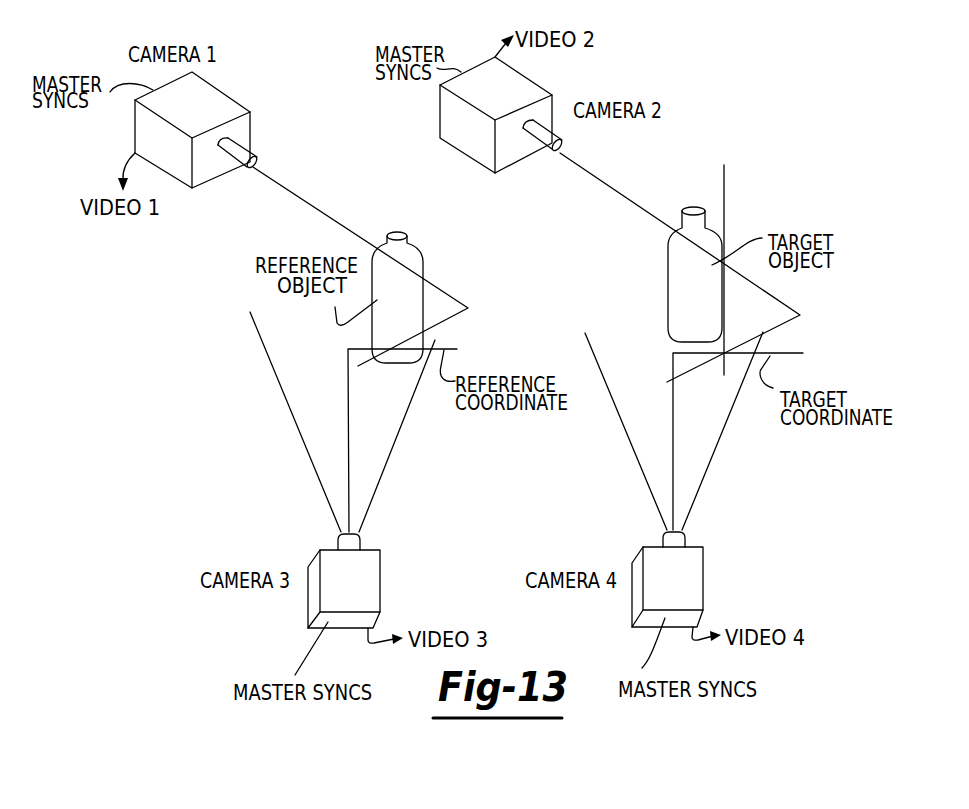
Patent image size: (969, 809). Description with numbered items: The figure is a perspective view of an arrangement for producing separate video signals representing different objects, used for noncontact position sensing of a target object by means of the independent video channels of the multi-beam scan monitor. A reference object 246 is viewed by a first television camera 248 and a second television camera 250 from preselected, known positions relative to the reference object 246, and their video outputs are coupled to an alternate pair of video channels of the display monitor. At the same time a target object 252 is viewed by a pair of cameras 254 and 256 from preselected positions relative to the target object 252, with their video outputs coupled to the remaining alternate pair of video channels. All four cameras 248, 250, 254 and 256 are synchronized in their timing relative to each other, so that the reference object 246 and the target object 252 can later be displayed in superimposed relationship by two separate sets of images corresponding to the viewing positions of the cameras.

The first television camera 248 is at (220, 102).
The camera 254 is at (530, 85).
The reference object 246 is at (405, 248).
The target object 252 is at (678, 250).
The second television camera 250 is at (372, 563).
The camera 256 is at (692, 565).